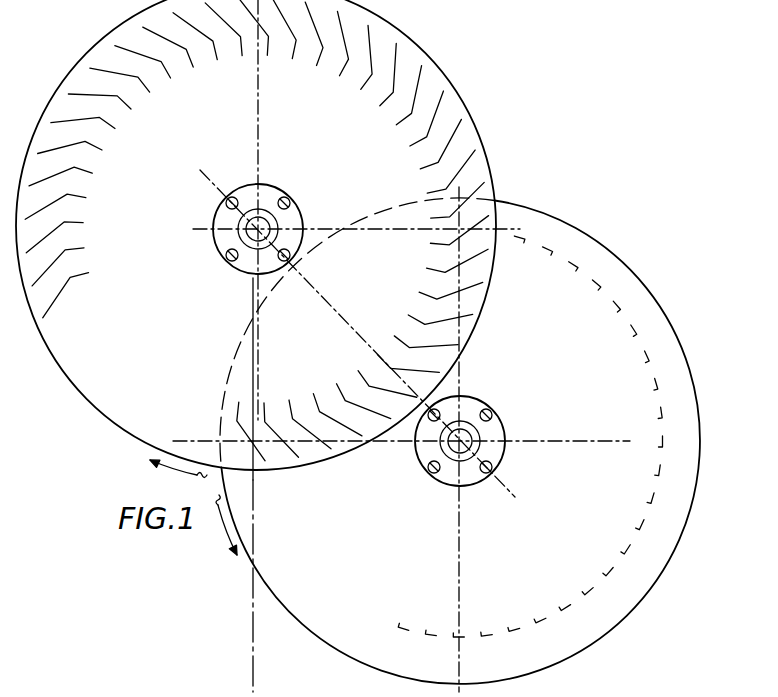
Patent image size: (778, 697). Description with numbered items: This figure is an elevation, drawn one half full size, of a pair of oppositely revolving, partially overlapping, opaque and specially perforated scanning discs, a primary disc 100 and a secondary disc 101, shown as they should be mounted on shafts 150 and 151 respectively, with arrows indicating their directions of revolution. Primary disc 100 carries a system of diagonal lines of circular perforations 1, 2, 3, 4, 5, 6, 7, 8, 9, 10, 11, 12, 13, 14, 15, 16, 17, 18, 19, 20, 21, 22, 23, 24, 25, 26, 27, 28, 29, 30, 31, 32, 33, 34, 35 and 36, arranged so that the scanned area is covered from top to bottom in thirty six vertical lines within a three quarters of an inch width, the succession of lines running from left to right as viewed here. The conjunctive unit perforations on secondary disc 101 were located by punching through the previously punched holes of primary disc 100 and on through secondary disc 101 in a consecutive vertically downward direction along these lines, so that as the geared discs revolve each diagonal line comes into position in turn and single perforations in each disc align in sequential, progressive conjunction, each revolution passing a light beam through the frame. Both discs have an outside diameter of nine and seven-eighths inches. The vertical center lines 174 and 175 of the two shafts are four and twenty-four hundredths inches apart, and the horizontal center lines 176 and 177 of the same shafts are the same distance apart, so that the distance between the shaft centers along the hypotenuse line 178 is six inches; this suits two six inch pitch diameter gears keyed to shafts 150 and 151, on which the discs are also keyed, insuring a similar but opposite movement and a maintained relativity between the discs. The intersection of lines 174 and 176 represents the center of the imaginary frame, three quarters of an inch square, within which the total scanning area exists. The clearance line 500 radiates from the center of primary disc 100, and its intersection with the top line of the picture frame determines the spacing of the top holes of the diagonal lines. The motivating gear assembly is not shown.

The diagonal line of perforations 1 is at (250, 425).
The diagonal line of perforations 2 is at (278, 424).
The diagonal line of perforations 3 is at (306, 419).
The diagonal line of perforations 4 is at (332, 409).
The diagonal line of perforations 5 is at (357, 397).
The diagonal line of perforations 6 is at (380, 381).
The diagonal line of perforations 7 is at (401, 361).
The diagonal line of perforations 8 is at (419, 340).
The diagonal line of perforations 9 is at (433, 315).
The diagonal line of perforations 10 is at (442, 289).
The diagonal line of perforations 11 is at (449, 262).
The diagonal line of perforations 12 is at (453, 233).
The diagonal line of perforations 13 is at (451, 204).
The diagonal line of perforations 14 is at (467, 216).
The diagonal line of perforations 15 is at (476, 205).
The diagonal line of perforations 16 is at (481, 198).
The diagonal line of perforations 17 is at (484, 194).
The diagonal line of perforations 18 is at (484, 191).
The diagonal line of perforations 19 is at (482, 192).
The diagonal line of perforations 20 is at (477, 195).
The diagonal line of perforations 21 is at (469, 202).
The diagonal line of perforations 22 is at (661, 441).
The diagonal line of perforations 23 is at (660, 441).
The diagonal line of perforations 24 is at (660, 441).
The diagonal line of perforations 25 is at (659, 441).
The diagonal line of perforations 26 is at (658, 441).
The diagonal line of perforations 27 is at (374, 290).
The diagonal line of perforations 28 is at (353, 310).
The diagonal line of perforations 29 is at (332, 330).
The diagonal line of perforations 30 is at (313, 350).
The diagonal line of perforations 31 is at (294, 369).
The diagonal line of perforations 32 is at (276, 389).
The diagonal line of perforations 33 is at (260, 408).
The diagonal line of perforations 34 is at (246, 425).
The diagonal line of perforations 35 is at (236, 437).
The diagonal line of perforations 36 is at (226, 445).
The primary disc 100 is at (83, 397).
The secondary disc 101 is at (653, 585).
The shaft 150 is at (252, 233).
The shaft 151 is at (455, 446).
The vertical center line 174 is at (250, 587).
The vertical center line 175 is at (458, 670).
The horizontal center line 176 is at (183, 438).
The horizontal center line 177 is at (201, 224).
The hypotenuse line 178 is at (345, 313).
The clearance line 500 is at (264, 375).